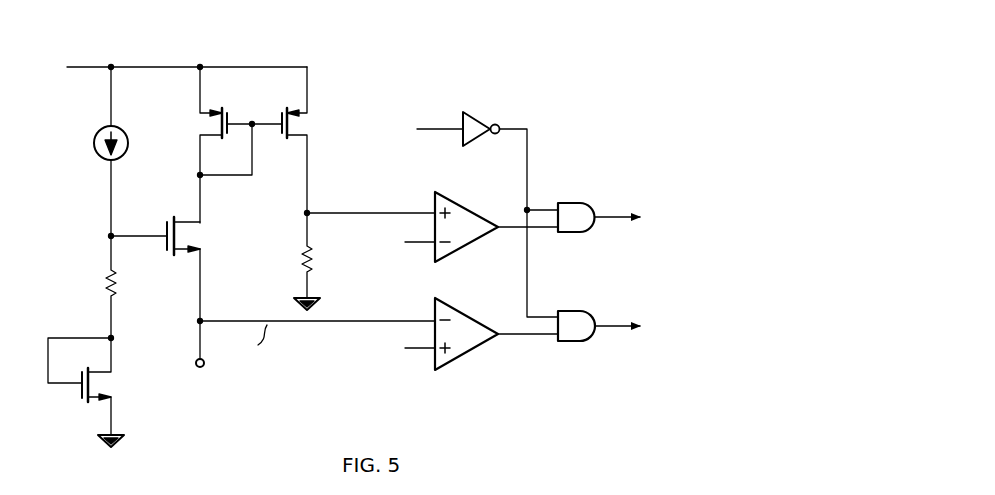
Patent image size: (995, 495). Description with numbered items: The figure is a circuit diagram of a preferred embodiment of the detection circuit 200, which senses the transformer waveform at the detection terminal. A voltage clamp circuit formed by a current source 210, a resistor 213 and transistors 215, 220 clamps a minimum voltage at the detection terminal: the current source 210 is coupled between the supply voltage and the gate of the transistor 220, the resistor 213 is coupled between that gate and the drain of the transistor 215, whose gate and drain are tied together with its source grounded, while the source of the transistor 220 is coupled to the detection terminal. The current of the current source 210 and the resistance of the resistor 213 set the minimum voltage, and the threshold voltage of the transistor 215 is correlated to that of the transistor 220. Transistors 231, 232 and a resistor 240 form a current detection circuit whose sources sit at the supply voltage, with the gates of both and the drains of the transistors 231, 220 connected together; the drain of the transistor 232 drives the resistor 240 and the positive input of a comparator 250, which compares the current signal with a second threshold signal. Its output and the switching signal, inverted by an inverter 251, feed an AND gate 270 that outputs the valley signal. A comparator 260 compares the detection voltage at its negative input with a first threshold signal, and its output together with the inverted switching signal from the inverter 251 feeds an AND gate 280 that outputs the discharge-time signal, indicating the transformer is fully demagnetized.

The detection circuit 200 is at (672, 73).
The current source 210 is at (91, 151).
The resistor 213 is at (93, 287).
The transistor 215 is at (97, 392).
The transistor 220 is at (172, 236).
The transistor 231 is at (224, 145).
The transistor 232 is at (313, 140).
The resistor 240 is at (292, 261).
The comparator 250 is at (432, 224).
The inverter 251 is at (462, 203).
The comparator 260 is at (462, 331).
The AND gate 270 is at (612, 203).
The AND gate 280 is at (611, 312).